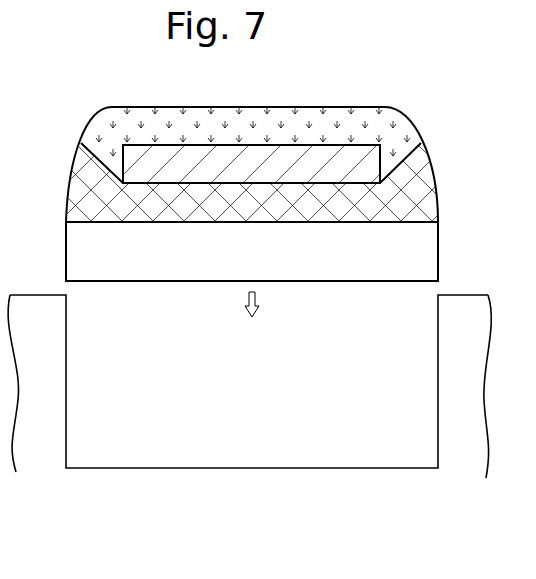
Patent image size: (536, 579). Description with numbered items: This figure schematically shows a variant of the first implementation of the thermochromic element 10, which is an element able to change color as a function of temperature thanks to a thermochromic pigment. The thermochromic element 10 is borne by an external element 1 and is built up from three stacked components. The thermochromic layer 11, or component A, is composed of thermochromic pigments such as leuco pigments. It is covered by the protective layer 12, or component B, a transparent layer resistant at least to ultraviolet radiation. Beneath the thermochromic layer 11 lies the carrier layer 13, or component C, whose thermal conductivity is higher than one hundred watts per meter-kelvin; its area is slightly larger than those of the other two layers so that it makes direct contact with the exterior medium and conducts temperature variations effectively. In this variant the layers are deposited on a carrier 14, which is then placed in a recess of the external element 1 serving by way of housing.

The external element 1 is at (434, 516).
The thermochromic element 10 is at (399, 92).
The thermochromic layer 11 is at (283, 172).
The protective layer 12 is at (333, 128).
The carrier layer 13 is at (157, 207).
The carrier 14 is at (192, 268).